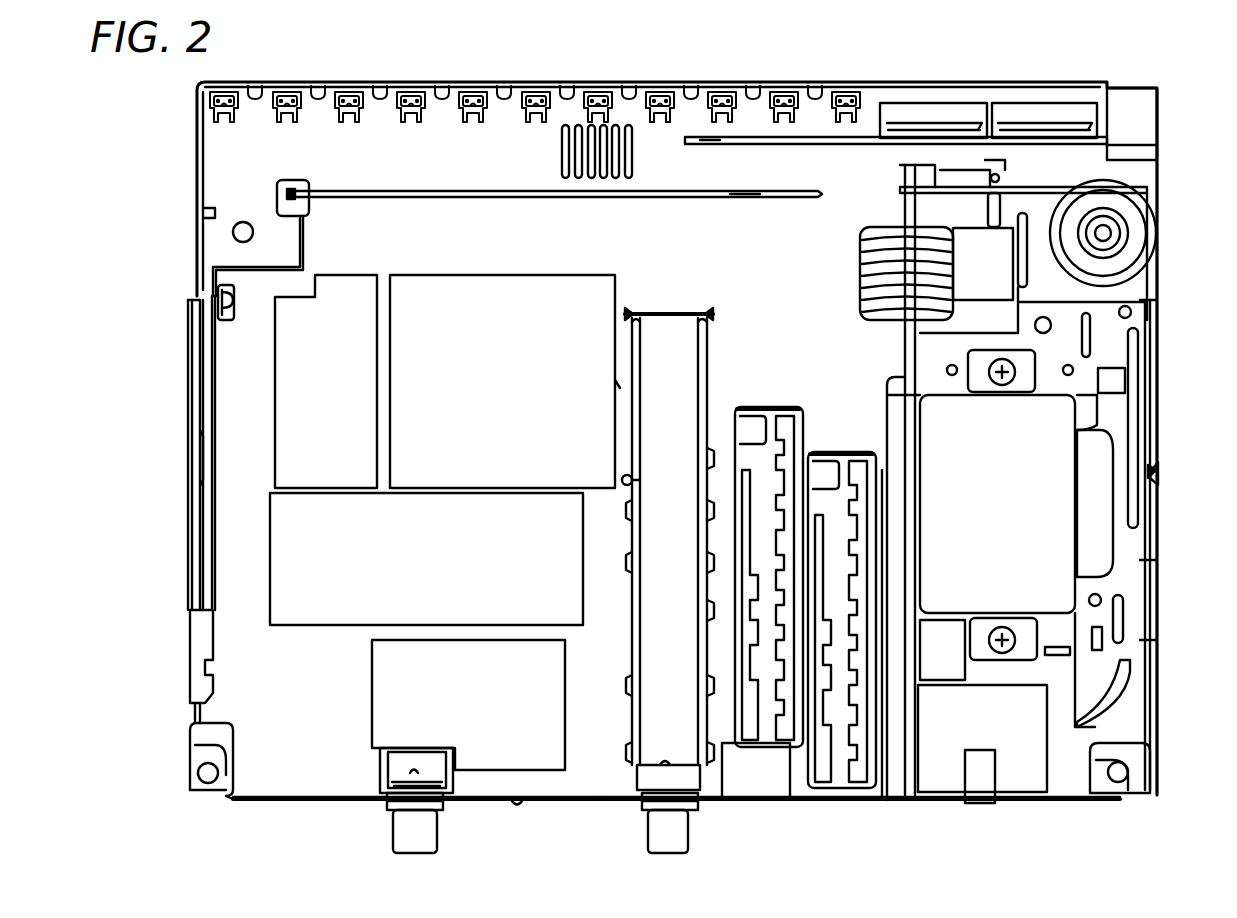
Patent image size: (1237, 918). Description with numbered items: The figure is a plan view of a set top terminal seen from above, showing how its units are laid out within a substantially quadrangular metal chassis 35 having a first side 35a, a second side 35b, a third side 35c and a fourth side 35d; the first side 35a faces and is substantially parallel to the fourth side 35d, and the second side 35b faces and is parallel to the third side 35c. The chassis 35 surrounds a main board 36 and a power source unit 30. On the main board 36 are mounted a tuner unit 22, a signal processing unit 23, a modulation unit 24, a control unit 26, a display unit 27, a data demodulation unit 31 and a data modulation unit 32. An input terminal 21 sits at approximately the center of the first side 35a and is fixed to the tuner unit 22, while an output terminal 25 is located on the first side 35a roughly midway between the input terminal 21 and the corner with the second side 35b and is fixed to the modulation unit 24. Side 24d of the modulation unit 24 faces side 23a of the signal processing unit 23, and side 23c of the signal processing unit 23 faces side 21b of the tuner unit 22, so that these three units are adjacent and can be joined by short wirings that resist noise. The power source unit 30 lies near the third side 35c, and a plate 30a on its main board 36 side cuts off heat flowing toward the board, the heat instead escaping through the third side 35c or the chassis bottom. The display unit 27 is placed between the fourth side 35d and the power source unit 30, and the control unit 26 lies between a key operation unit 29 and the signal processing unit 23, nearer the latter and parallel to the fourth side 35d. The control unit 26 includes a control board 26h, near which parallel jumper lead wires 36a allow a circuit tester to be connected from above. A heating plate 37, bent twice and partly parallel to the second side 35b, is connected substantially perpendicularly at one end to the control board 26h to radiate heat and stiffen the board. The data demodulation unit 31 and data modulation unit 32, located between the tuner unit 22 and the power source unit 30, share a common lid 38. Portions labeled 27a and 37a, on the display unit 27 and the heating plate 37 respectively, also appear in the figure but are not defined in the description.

The input terminal 21 is at (690, 828).
The side of the tuner unit 21b is at (637, 490).
The tuner unit 22 is at (690, 367).
The signal processing unit 23 is at (475, 280).
The side of the signal processing unit 23a is at (470, 490).
The side of the signal processing unit 23c is at (618, 388).
The modulation unit 24 is at (477, 752).
The side of the modulation unit 24d is at (477, 642).
The output terminal 25 is at (395, 837).
The control unit 26 is at (645, 199).
The control board 26h is at (738, 199).
The display unit 27 is at (857, 147).
The slide plate edge 27a is at (818, 145).
The key operation unit 29 is at (406, 120).
The power source unit 30 is at (1107, 537).
The plate 30a is at (915, 550).
The data demodulation unit 31 is at (841, 450).
The data modulation unit 32 is at (771, 405).
The metal chassis 35 is at (300, 805).
The first side 35a is at (577, 805).
The second side 35b is at (190, 394).
The third side 35c is at (1153, 503).
The fourth side 35d is at (631, 82).
The main board 36 is at (213, 713).
The jumper lead wires 36a is at (629, 148).
The heating plate 37 is at (207, 358).
The panel tab 37a is at (283, 190).
The lid 38 is at (882, 778).